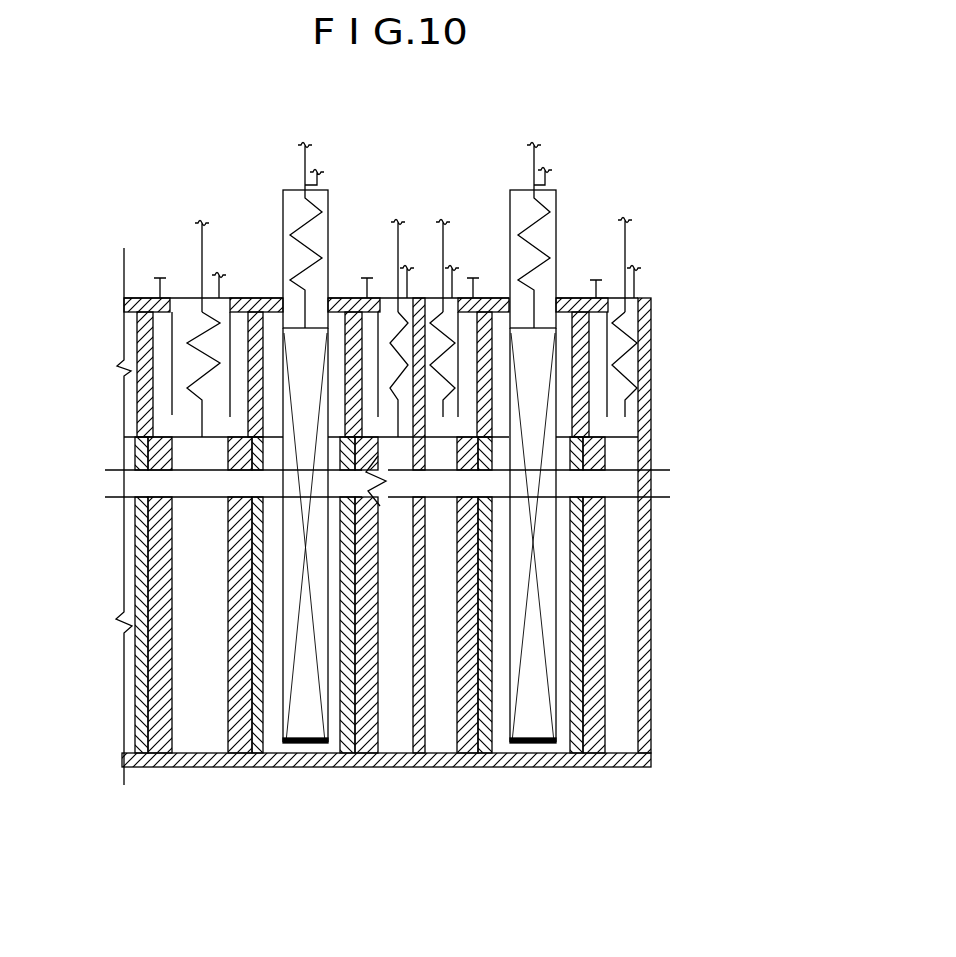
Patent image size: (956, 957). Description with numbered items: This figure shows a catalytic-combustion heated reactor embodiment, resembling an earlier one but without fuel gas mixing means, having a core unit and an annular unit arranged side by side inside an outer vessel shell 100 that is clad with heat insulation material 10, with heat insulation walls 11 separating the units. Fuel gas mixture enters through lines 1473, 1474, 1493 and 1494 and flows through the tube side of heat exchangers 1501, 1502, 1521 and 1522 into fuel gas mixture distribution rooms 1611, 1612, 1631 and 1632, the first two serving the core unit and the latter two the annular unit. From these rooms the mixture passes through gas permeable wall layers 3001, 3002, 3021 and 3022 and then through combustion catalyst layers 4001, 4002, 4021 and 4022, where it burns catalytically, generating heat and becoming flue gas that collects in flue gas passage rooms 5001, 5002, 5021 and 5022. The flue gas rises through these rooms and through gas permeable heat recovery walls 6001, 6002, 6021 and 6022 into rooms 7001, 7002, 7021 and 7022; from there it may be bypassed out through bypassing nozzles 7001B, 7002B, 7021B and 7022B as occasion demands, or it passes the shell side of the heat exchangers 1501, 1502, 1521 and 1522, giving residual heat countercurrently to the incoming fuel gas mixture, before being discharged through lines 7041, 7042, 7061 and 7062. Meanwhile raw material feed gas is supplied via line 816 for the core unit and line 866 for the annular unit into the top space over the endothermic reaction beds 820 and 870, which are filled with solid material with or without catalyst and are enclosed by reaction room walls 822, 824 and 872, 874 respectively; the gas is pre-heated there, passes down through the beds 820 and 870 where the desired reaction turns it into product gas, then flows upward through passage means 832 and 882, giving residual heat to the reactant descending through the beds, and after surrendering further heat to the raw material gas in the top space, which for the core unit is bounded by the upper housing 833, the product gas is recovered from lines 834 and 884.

The heat insulation material 10 is at (122, 762).
The heat insulation wall 11 is at (412, 760).
The outer vessel shell 100 is at (643, 743).
The gas permeable heat recovery wall 6001 is at (218, 333).
The gas permeable heat recovery wall 6021 is at (487, 322).
The gas permeable heat recovery wall 6002 is at (333, 440).
The gas permeable heat recovery wall 6022 is at (582, 423).
The room 7001 is at (237, 352).
The room 7002 is at (390, 452).
The room 7021 is at (467, 345).
The room 7022 is at (598, 360).
The heat exchanger 1501 is at (180, 378).
The heat exchanger 1502 is at (432, 420).
The heat exchanger 1521 is at (450, 385).
The heat exchanger 1522 is at (630, 392).
The fuel gas mixture feed line 1473 is at (200, 222).
The fuel gas mixture feed line 1474 is at (398, 222).
The fuel gas mixture feed line 1493 is at (443, 222).
The fuel gas mixture feed line 1494 is at (627, 220).
The bypassing nozzle 7001B is at (160, 278).
The bypassing nozzle 7002B is at (367, 278).
The bypassing nozzle 7021B is at (473, 278).
The bypassing nozzle 7022B is at (597, 280).
The flue gas discharge line 7041 is at (224, 277).
The flue gas discharge line 7042 is at (408, 268).
The flue gas discharge line 7061 is at (452, 268).
The flue gas discharge line 7062 is at (642, 270).
The heater housing 833 is at (290, 213).
The product gas recovery line 834 is at (303, 163).
The raw material feed gas line 816 is at (320, 183).
The product gas recovery line 884 is at (536, 157).
The raw material feed gas line 866 is at (549, 181).
The tube wall 822 is at (280, 513).
The tube wall 824 is at (322, 535).
The endothermic reaction bed 820 is at (288, 583).
The passage means 832 is at (300, 443).
The tube wall 872 is at (510, 513).
The tube wall 874 is at (556, 533).
The endothermic reaction bed 870 is at (545, 573).
The passage means 882 is at (537, 452).
The combustion catalyst layer 4001 is at (143, 752).
The gas permeable wall layer 3001 is at (235, 740).
The combustion catalyst layer 4002 is at (347, 760).
The gas permeable wall layer 3002 is at (367, 738).
The gas permeable wall layer 3021 is at (465, 735).
The combustion catalyst layer 4021 is at (485, 748).
The combustion catalyst layer 4022 is at (575, 740).
The gas permeable wall layer 3022 is at (590, 740).
The fuel gas mixture distribution room 1611 is at (198, 735).
The fuel gas mixture distribution room 1612 is at (395, 738).
The fuel gas mixture distribution room 1631 is at (437, 735).
The fuel gas mixture distribution room 1632 is at (623, 740).
The flue gas passage room 5001 is at (270, 713).
The flue gas passage room 5002 is at (333, 667).
The flue gas passage room 5021 is at (500, 698).
The flue gas passage room 5022 is at (566, 668).